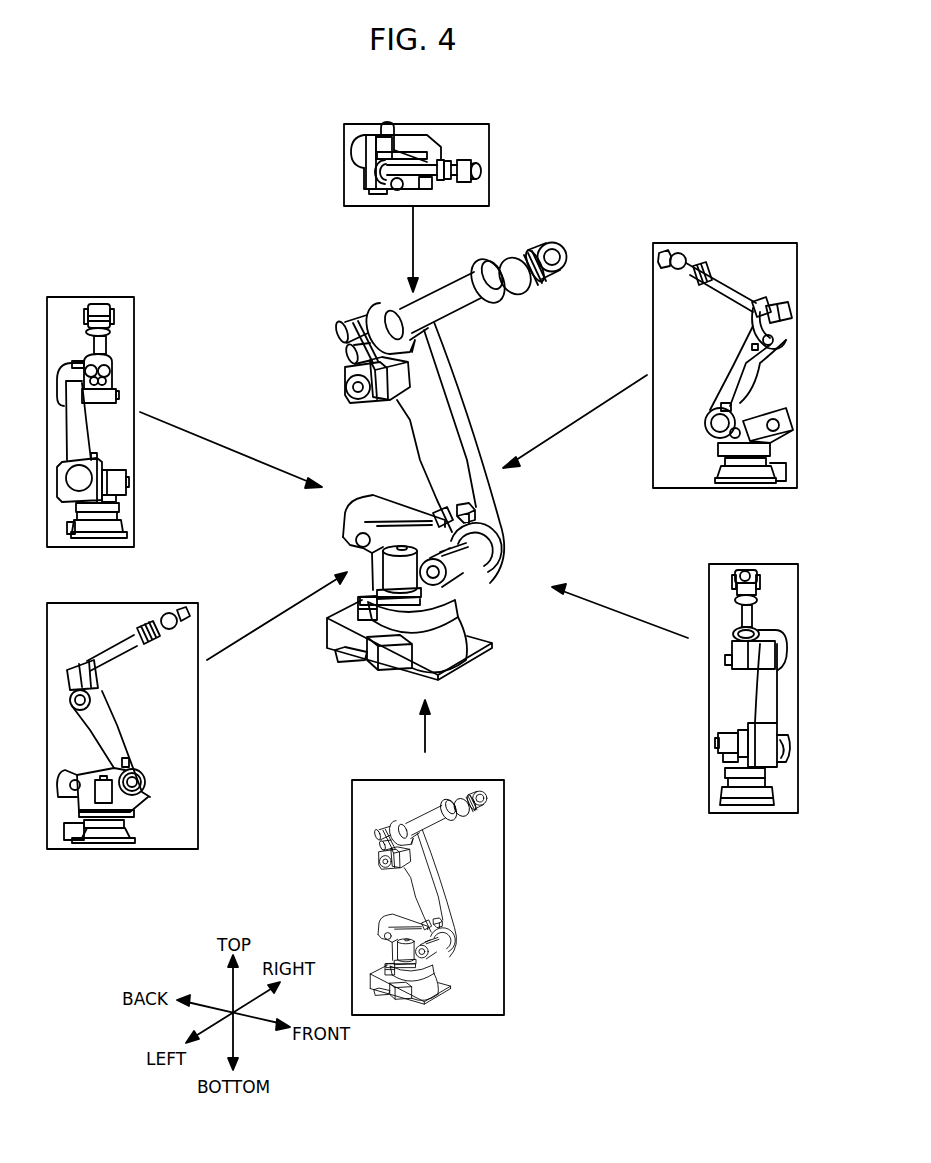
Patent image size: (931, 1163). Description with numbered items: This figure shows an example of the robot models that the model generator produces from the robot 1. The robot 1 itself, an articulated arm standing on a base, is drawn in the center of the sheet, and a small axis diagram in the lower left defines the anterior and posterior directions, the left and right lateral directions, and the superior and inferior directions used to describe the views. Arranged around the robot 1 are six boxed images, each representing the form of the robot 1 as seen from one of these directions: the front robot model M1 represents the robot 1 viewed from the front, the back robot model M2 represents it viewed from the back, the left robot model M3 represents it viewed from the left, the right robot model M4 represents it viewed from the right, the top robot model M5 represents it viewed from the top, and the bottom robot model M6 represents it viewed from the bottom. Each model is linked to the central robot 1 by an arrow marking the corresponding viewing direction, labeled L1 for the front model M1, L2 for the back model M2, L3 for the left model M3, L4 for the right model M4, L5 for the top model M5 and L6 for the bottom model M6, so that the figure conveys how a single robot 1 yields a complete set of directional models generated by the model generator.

The robot 1 is at (538, 362).
The front robot model M1 is at (761, 813).
The back robot model M2 is at (80, 297).
The left robot model M3 is at (141, 849).
The right robot model M4 is at (718, 243).
The top robot model M5 is at (440, 124).
The bottom robot model M6 is at (504, 915).
The line of sight from front L1 is at (605, 608).
The line of sight from back L2 is at (212, 445).
The line of sight from left L3 is at (263, 620).
The line of sight from right L4 is at (587, 417).
The line of sight from top L5 is at (413, 250).
The line of sight from bottom L6 is at (425, 728).